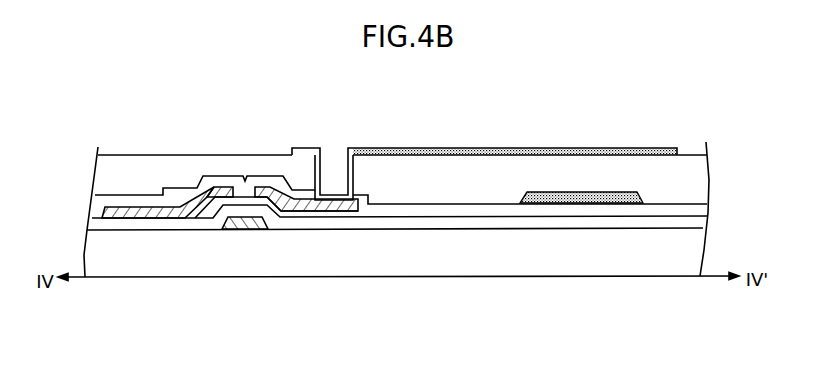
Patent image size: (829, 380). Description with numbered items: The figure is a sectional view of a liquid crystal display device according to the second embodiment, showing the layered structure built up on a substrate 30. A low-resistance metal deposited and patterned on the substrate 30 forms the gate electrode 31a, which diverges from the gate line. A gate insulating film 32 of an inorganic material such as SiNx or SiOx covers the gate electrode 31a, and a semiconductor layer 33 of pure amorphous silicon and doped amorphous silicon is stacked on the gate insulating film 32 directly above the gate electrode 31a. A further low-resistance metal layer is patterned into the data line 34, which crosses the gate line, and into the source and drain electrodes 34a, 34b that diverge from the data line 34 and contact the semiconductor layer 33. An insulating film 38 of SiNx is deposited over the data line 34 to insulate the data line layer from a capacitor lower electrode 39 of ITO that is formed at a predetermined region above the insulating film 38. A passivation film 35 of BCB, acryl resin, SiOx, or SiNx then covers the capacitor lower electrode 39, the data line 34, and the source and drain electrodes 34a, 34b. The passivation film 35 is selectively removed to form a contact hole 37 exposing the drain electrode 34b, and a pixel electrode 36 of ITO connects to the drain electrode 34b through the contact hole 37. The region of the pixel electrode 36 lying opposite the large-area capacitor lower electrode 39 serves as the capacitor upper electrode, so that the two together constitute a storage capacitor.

The substrate 30 is at (688, 248).
The gate electrode 31a is at (243, 222).
The gate insulating film 32 is at (403, 222).
The semiconductor layer 33 is at (197, 215).
The data line 34 is at (142, 205).
The source electrode 34a is at (221, 187).
The drain electrode 34b is at (266, 187).
The passivation film 35 is at (700, 183).
The pixel electrode 36 is at (436, 147).
The contact hole 37 is at (332, 174).
The insulating film 38 is at (708, 210).
The capacitor lower electrode 39 is at (580, 197).